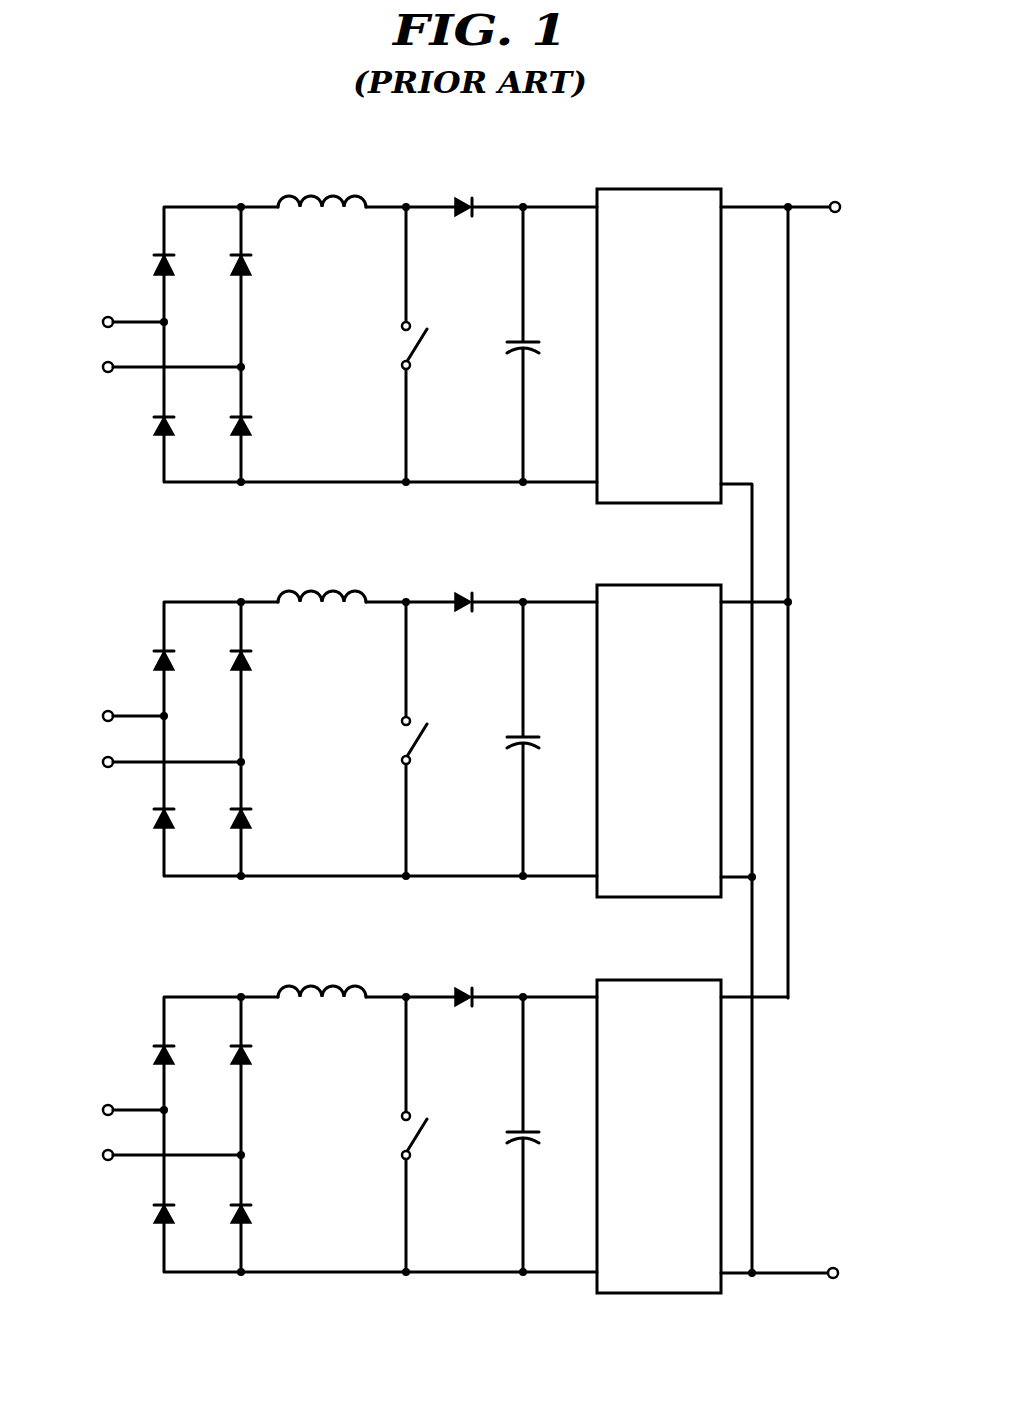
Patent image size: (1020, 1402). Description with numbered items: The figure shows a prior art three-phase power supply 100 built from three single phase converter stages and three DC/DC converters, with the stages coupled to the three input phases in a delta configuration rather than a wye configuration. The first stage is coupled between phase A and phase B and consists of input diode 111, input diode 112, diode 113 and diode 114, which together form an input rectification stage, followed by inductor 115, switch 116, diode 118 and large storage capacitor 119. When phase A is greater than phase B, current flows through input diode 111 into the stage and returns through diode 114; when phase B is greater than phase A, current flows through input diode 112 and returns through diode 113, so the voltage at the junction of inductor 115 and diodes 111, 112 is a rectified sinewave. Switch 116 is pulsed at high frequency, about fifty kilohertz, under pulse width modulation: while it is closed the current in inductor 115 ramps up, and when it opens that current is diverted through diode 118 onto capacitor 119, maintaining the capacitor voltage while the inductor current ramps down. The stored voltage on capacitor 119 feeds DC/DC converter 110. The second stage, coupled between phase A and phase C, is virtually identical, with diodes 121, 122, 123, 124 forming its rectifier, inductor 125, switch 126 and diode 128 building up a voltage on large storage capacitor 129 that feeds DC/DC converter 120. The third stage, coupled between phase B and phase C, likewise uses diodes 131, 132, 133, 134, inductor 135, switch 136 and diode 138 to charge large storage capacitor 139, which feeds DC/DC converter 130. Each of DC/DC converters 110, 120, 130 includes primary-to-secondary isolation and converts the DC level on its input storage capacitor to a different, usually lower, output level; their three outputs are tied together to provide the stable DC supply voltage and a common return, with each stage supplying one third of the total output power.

The three-phase power supply 100 is at (162, 144).
The DC/DC converter 110 is at (695, 189).
The input diode 111 is at (160, 252).
The input diode 112 is at (244, 272).
The diode 113 is at (160, 430).
The diode 114 is at (244, 414).
The inductor 115 is at (294, 193).
The switch 116 is at (416, 348).
The diode 118 is at (466, 220).
The storage capacitor 119 is at (513, 337).
The DC/DC converter 120 is at (624, 585).
The input diode 121 is at (160, 647).
The input diode 122 is at (244, 667).
The diode 123 is at (160, 825).
The diode 124 is at (244, 809).
The inductor 125 is at (294, 588).
The switch 126 is at (416, 743).
The diode 128 is at (466, 615).
The storage capacitor 129 is at (513, 732).
The DC/DC converter 130 is at (624, 980).
The input diode 131 is at (160, 1042).
The input diode 132 is at (244, 1062).
The diode 133 is at (160, 1220).
The diode 134 is at (244, 1204).
The inductor 135 is at (294, 983).
The switch 136 is at (416, 1138).
The diode 138 is at (466, 1010).
The storage capacitor 139 is at (513, 1127).